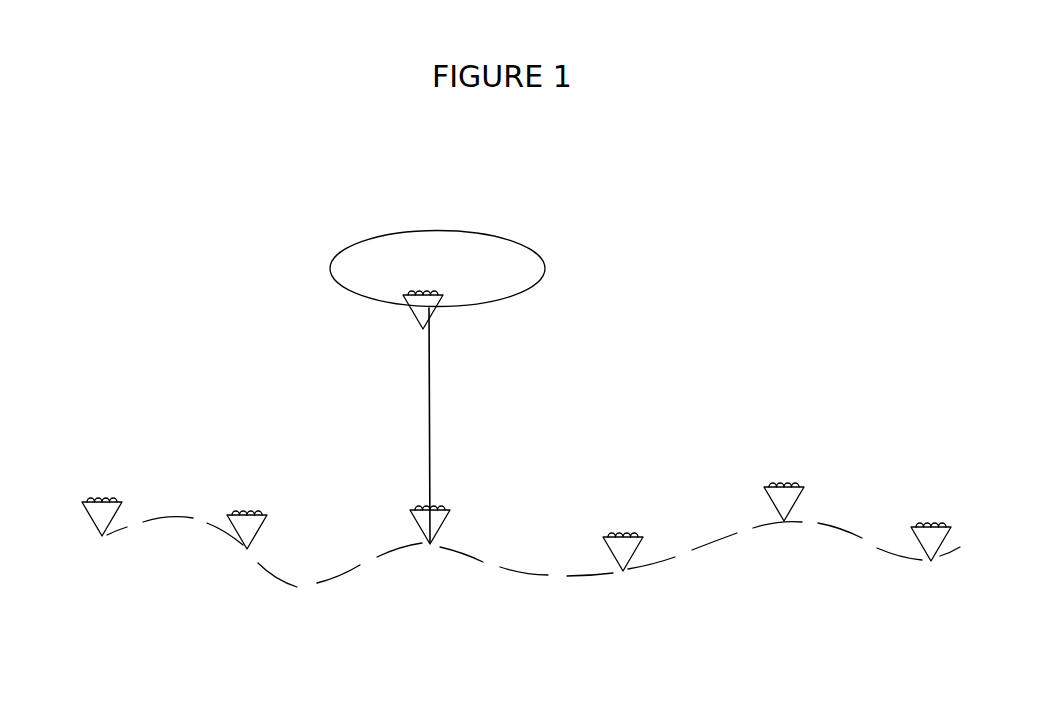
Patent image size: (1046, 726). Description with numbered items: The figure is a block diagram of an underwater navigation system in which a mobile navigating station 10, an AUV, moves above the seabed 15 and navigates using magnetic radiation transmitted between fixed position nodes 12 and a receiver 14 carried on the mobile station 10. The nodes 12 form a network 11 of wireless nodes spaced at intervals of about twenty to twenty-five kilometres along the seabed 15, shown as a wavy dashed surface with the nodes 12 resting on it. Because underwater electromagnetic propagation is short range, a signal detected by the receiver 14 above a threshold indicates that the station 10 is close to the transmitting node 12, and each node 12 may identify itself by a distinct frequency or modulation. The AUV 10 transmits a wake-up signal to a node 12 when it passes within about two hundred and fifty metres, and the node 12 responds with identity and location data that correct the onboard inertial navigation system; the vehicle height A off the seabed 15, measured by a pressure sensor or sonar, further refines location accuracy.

The mobile navigating station 10 is at (428, 228).
The network 11 is at (187, 480).
The fixed position node 12 is at (99, 512).
The receiver 14 is at (437, 320).
The seabed 15 is at (733, 533).
The vehicle height A is at (414, 425).